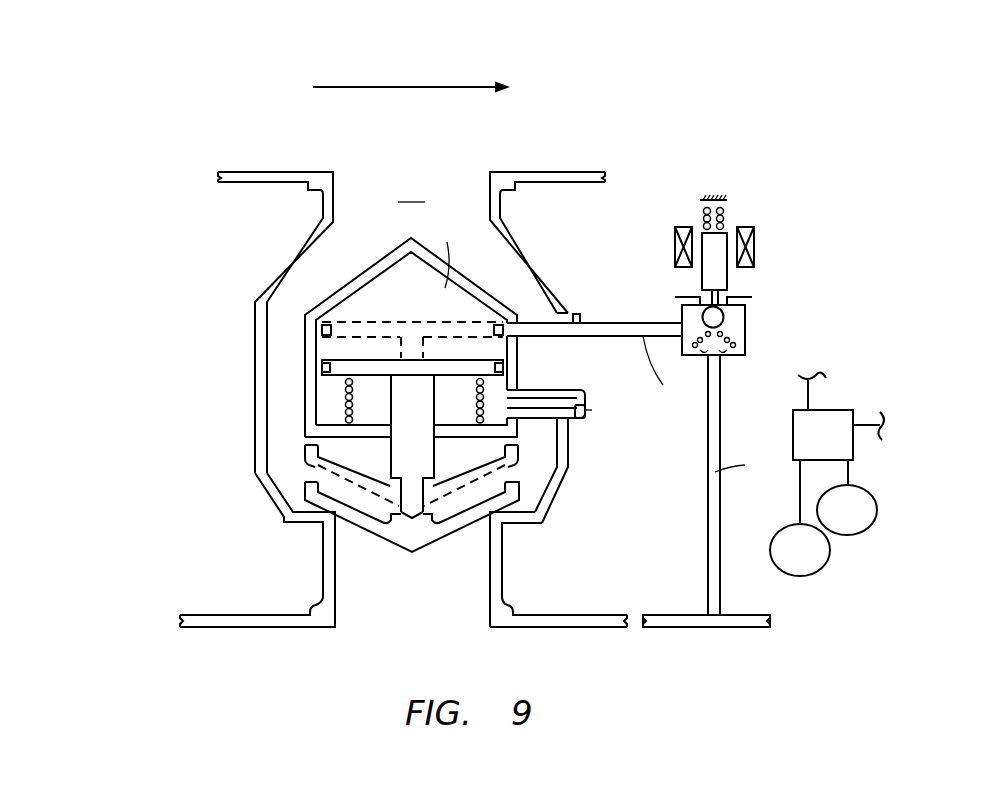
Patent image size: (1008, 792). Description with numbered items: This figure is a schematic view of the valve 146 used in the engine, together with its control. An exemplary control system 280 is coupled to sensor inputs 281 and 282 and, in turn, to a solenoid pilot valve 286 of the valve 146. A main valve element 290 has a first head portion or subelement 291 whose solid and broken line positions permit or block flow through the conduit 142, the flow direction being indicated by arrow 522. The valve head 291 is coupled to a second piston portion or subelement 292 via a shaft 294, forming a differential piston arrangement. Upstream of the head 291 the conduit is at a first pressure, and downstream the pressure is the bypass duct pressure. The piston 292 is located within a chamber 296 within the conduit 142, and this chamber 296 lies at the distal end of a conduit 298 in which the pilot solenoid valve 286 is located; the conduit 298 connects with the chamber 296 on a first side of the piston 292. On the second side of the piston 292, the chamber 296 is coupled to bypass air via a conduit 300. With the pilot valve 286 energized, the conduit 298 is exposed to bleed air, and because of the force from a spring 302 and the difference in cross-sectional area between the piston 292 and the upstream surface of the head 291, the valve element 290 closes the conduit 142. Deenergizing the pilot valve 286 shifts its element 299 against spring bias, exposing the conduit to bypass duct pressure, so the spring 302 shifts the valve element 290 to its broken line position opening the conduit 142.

The valve 146 is at (145, 168).
The conduit 142 is at (347, 198).
The flow direction arrow 522 is at (410, 87).
The second piston portion 292 is at (365, 362).
The shaft 294 is at (405, 384).
The spring 302 is at (348, 403).
The first head portion 291 is at (290, 508).
The chamber 296 is at (481, 289).
The conduit 298 is at (577, 313).
The solenoid pilot valve 286 is at (760, 411).
The element 299 is at (723, 318).
The main valve element 290 is at (418, 395).
The conduit 300 is at (578, 423).
The control system 280 is at (844, 446).
The sensor input 281 is at (819, 562).
The sensor input 282 is at (867, 522).